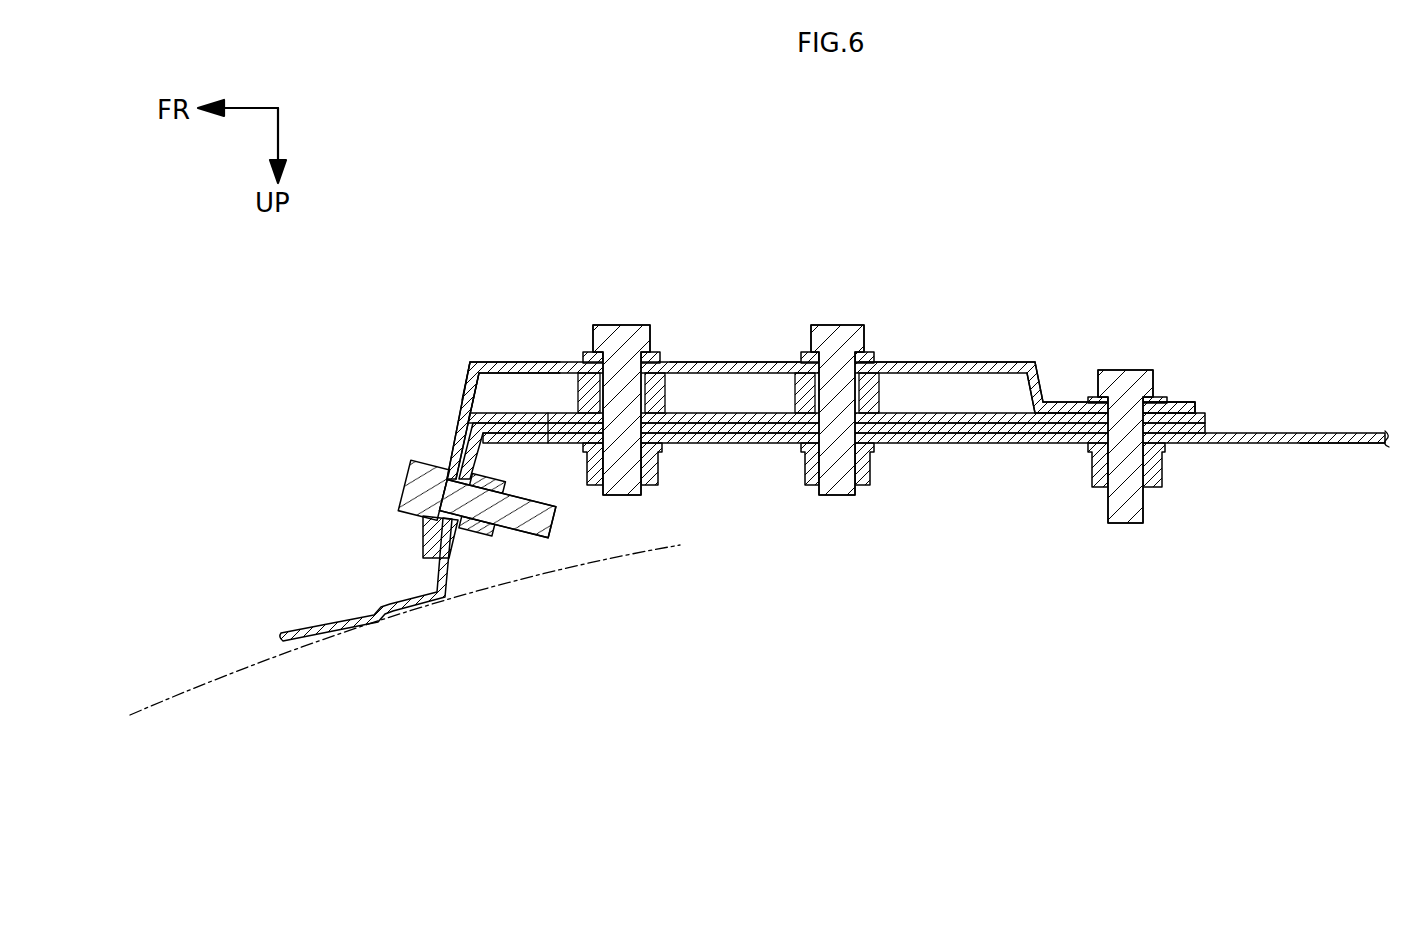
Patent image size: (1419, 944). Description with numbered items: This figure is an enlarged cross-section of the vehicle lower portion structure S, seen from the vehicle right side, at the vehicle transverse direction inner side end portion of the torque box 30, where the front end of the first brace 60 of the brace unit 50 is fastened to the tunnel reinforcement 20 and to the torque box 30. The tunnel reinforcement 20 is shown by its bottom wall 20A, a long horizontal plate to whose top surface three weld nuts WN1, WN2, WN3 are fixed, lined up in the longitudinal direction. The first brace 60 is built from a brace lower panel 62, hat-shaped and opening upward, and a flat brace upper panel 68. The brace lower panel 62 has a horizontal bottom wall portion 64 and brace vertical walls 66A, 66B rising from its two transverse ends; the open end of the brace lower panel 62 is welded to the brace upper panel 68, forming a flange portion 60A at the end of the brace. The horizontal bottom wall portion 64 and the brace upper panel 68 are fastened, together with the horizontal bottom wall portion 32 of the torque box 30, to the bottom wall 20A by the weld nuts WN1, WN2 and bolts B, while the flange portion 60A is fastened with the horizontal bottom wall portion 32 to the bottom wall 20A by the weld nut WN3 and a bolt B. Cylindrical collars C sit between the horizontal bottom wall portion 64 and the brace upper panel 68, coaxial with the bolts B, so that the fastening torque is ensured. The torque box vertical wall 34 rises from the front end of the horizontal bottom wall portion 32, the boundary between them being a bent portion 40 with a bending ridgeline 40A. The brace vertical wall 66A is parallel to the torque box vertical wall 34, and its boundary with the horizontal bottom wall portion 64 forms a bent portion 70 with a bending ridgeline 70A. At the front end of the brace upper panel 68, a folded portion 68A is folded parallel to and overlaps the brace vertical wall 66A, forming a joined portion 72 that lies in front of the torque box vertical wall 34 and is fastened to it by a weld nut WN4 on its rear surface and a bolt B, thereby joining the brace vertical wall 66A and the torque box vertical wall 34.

The tunnel reinforcement 20 is at (1368, 424).
The bottom wall 20A is at (1342, 445).
The torque box 30 is at (426, 576).
The horizontal bottom wall portion 32 is at (545, 445).
The torque box vertical wall 34 is at (472, 455).
The bent portion 40 is at (741, 402).
The bending ridgeline 40A is at (468, 414).
The brace unit 50 is at (1027, 250).
The first brace 60 is at (821, 343).
The flange portion 60A is at (1212, 424).
The brace lower panel 62 is at (950, 361).
The horizontal bottom wall portion 64 is at (750, 361).
The brace vertical wall 66A is at (463, 385).
The brace vertical wall 66B is at (1043, 394).
The brace upper panel 68 is at (997, 412).
The folded portion 68A is at (455, 557).
The bent portion 70 is at (479, 334).
The bending ridgeline 70A is at (469, 361).
The joined portion 72 is at (465, 429).
The bolt B is at (765, 465).
The collar C is at (667, 394).
The vehicle lower portion structure S is at (900, 177).
The weld nut WN1 is at (655, 487).
The weld nut WN2 is at (866, 488).
The weld nut WN3 is at (1155, 489).
The weld nut WN4 is at (500, 540).